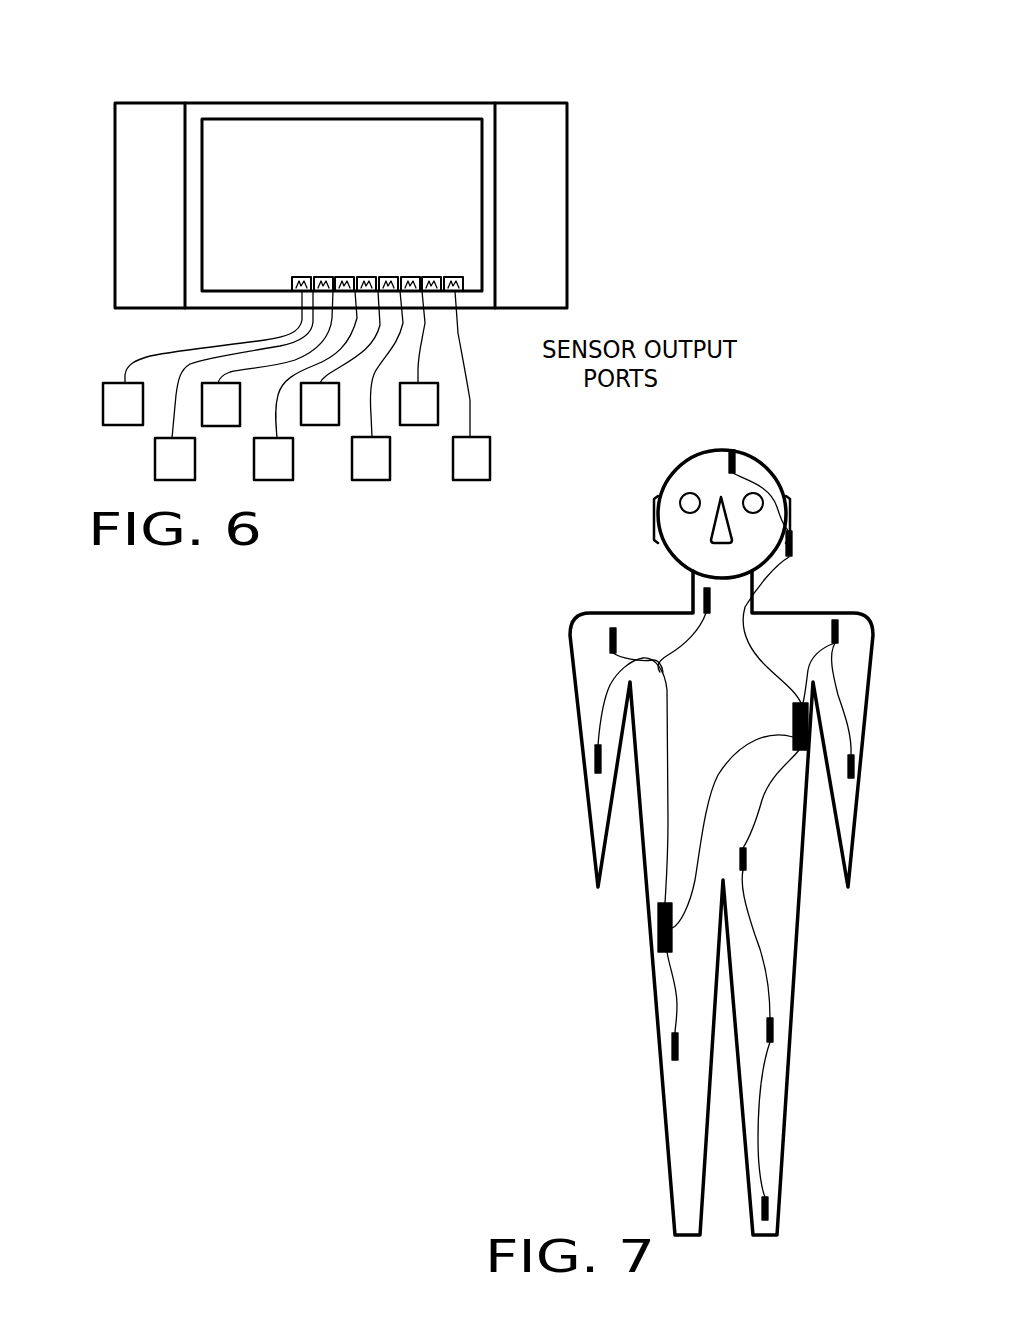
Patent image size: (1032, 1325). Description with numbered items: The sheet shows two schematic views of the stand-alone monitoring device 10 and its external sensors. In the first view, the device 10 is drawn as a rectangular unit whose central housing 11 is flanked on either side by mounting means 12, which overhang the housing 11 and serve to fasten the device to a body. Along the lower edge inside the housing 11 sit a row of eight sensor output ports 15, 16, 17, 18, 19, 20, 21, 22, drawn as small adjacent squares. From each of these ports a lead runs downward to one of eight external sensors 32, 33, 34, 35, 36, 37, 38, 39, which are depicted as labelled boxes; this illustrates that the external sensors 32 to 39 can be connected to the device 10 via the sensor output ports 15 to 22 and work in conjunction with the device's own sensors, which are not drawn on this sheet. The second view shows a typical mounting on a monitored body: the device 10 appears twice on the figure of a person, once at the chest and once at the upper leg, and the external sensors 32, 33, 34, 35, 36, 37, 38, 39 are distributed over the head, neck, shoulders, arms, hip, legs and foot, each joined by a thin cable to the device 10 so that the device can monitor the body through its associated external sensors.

In FIG. 6, the device 10 is at (417, 205).
In FIG. 7, the device 10 is at (809, 728).
In FIG. 6, the housing 11 is at (430, 103).
In FIG. 6, the mounting means 12 is at (605, 80).
In FIG. 6, the sensor output port 15 is at (298, 277).
In FIG. 6, the sensor output port 16 is at (326, 277).
In FIG. 6, the sensor output port 17 is at (346, 277).
In FIG. 6, the sensor output port 18 is at (369, 277).
In FIG. 6, the sensor output port 19 is at (389, 277).
In FIG. 6, the sensor output port 20 is at (408, 277).
In FIG. 6, the sensor output port 21 is at (432, 277).
In FIG. 6, the sensor output port 22 is at (455, 277).
In FIG. 6, the external sensor 32 is at (202, 358).
In FIG. 7, the external sensor 32 is at (735, 452).
In FIG. 6, the external sensor 33 is at (234, 385).
In FIG. 7, the external sensor 33 is at (793, 553).
In FIG. 6, the external sensor 34 is at (267, 358).
In FIG. 7, the external sensor 34 is at (703, 598).
In FIG. 6, the external sensor 35 is at (305, 385).
In FIG. 7, the external sensor 35 is at (855, 780).
In FIG. 6, the external sensor 36 is at (340, 358).
In FIG. 7, the external sensor 36 is at (746, 870).
In FIG. 6, the external sensor 37 is at (377, 385).
In FIG. 7, the external sensor 37 is at (773, 1042).
In FIG. 6, the external sensor 38 is at (419, 358).
In FIG. 7, the external sensor 38 is at (768, 1200).
In FIG. 6, the external sensor 39 is at (471, 385).
In FIG. 7, the external sensor 39 is at (672, 1057).